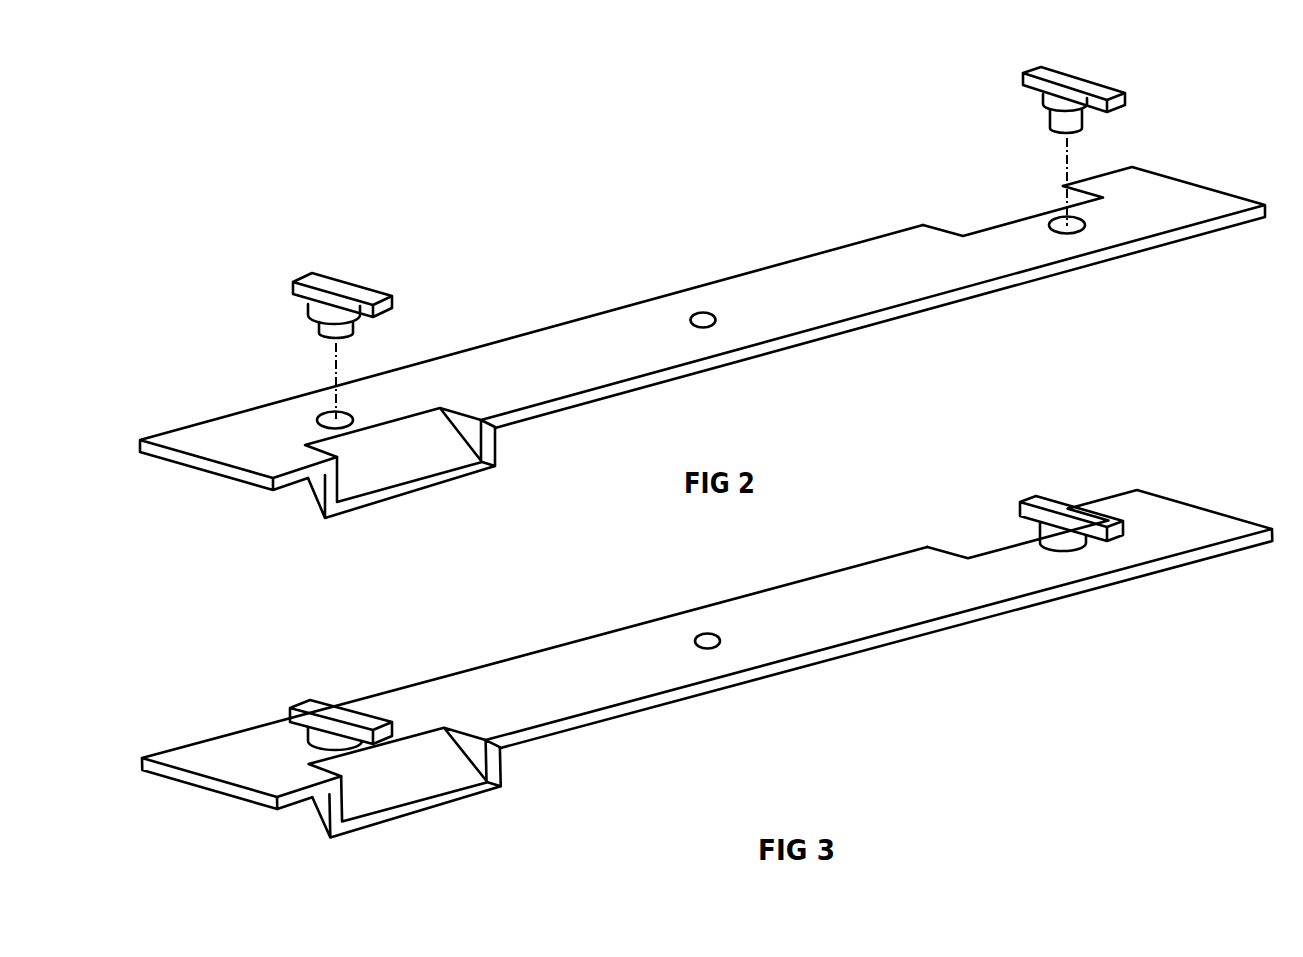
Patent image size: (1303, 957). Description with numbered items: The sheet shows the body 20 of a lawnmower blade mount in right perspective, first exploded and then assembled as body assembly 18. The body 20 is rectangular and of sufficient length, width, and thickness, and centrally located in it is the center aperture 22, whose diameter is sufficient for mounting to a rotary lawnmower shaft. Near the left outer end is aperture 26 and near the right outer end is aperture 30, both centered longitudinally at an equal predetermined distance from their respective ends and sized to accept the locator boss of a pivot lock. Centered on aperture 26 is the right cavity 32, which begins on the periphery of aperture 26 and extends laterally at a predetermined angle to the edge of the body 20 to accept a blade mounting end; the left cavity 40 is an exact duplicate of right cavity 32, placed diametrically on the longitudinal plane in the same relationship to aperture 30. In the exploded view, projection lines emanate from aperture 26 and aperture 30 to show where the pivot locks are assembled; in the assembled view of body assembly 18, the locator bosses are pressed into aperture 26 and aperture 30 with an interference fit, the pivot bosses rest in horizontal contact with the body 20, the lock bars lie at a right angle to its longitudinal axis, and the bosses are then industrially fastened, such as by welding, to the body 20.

In FIG. 3, the body assembly 18 is at (707, 663).
In FIG. 2, the body 20 is at (735, 292).
In FIG. 3, the body 20 is at (813, 593).
In FIG. 2, the center aperture 22 is at (712, 323).
In FIG. 3, the center aperture 22 is at (715, 647).
In FIG. 2, the aperture 26 is at (320, 422).
In FIG. 2, the aperture 30 is at (1085, 230).
In FIG. 2, the right cavity 32 is at (407, 483).
In FIG. 3, the right cavity 32 is at (410, 803).
In FIG. 2, the left cavity 40 is at (998, 227).
In FIG. 3, the left cavity 40 is at (1005, 550).